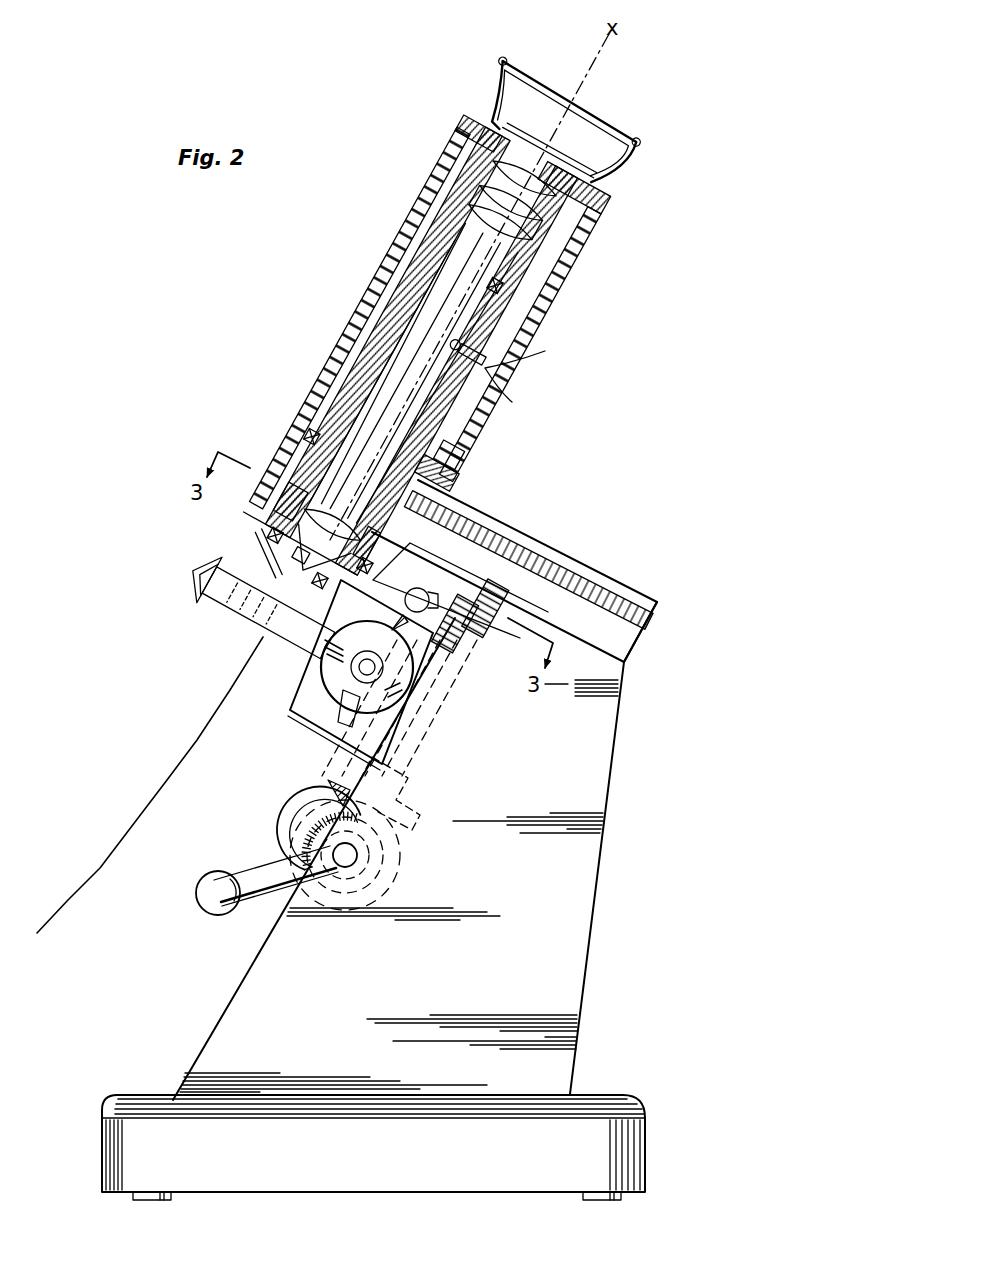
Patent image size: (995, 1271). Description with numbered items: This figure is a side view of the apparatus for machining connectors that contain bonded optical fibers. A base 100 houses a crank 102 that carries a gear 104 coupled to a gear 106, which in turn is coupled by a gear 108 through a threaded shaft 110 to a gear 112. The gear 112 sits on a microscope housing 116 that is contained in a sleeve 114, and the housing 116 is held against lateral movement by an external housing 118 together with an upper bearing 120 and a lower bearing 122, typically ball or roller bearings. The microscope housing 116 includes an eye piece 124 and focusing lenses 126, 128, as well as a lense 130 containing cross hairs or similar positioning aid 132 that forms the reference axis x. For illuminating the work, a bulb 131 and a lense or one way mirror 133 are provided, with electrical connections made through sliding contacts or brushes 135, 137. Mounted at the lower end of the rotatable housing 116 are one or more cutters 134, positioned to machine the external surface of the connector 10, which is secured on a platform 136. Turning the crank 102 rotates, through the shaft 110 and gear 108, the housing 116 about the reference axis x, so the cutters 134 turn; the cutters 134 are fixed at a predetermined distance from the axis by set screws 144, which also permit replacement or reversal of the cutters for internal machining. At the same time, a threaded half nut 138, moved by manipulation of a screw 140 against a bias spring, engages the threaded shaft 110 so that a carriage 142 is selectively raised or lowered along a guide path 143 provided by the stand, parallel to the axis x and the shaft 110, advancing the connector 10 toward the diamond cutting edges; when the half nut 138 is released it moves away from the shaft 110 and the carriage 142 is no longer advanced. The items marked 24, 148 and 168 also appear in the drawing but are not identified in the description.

The connector 10 is at (281, 584).
The screen 24 is at (172, 778).
The base 100 is at (575, 992).
The crank 102 is at (256, 872).
The gear 104 is at (328, 803).
The gear 106 is at (416, 836).
The gear 108 is at (580, 580).
The threaded shaft 110 is at (500, 630).
The gear 112 is at (298, 430).
The sleeve 114 is at (462, 440).
The microscope housing 116 is at (537, 306).
The external housing 118 is at (530, 437).
The upper bearing 120 is at (565, 246).
The lower bearing 122 is at (428, 498).
The eye piece 124 is at (636, 148).
The focusing lens 126 is at (582, 200).
The focusing lens 128 is at (325, 505).
The lense 130 is at (575, 268).
The bulb 131 is at (425, 378).
The cross hairs 132 is at (432, 247).
The one way mirror 133 is at (380, 308).
The cutters 134 is at (285, 562).
The sliding contacts 135 is at (503, 416).
The platform 136 is at (311, 660).
The sliding contacts 137 is at (538, 340).
The threaded half nut 138 is at (425, 623).
The screw 140 is at (430, 660).
The carriage 142 is at (322, 738).
The guide path 143 is at (440, 762).
The set screws 144 is at (275, 532).
The dial 148 is at (337, 677).
The pointer 168 is at (222, 603).